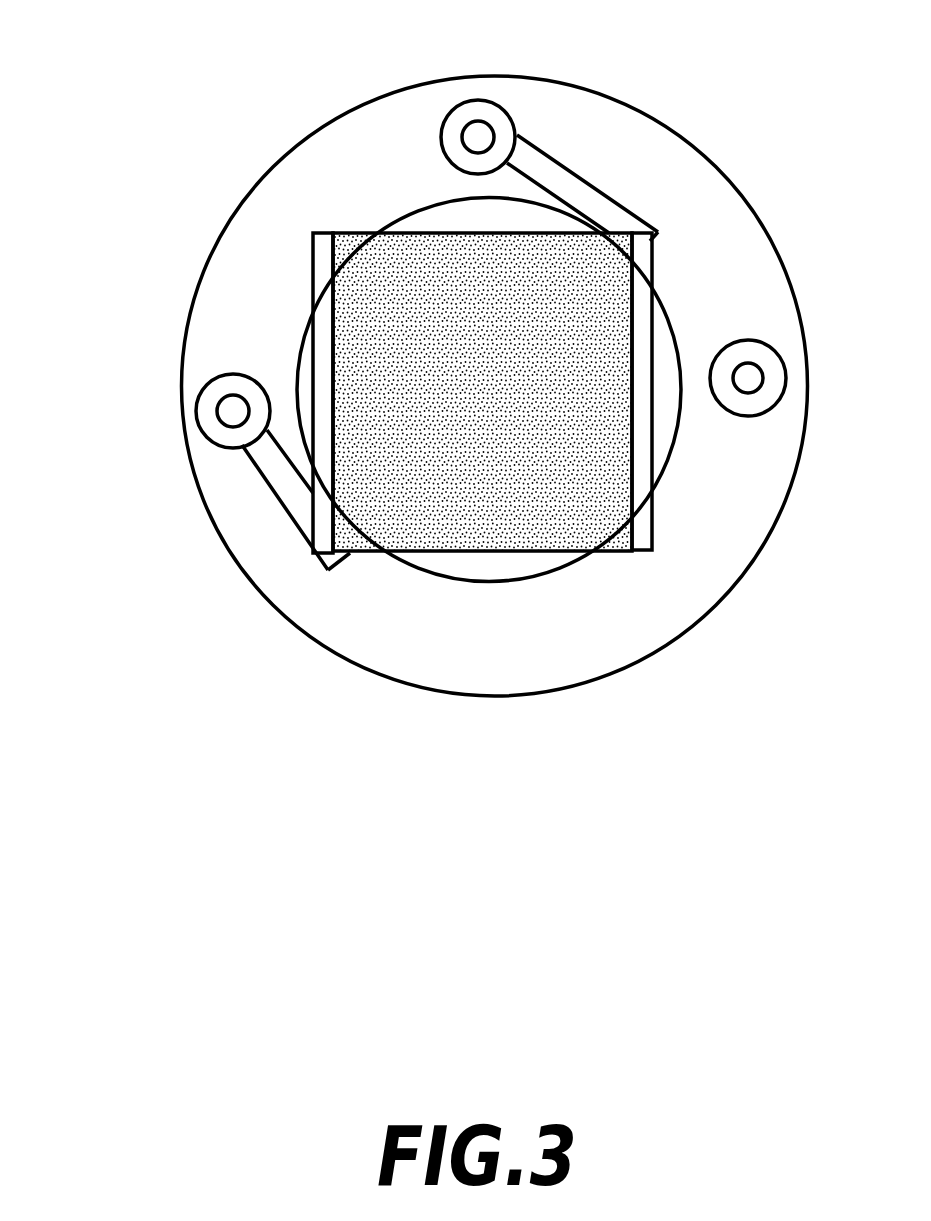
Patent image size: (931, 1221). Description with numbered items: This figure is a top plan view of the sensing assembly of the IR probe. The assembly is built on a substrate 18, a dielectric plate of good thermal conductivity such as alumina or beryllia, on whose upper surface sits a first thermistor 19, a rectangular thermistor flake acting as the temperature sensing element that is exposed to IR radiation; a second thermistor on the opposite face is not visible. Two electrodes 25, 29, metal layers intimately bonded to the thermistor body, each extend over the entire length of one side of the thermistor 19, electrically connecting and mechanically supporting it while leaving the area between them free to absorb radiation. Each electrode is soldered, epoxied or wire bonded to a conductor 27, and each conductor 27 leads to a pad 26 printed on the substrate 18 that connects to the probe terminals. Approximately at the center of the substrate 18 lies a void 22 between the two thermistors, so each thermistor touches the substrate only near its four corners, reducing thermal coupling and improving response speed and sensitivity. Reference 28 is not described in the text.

The substrate 18 is at (418, 113).
The first thermistor 19 is at (608, 522).
The void 22 is at (662, 345).
The electrode 25 is at (312, 267).
The pad 26 is at (231, 413).
The conductor 27 is at (277, 495).
The arm end pad 28 is at (322, 533).
The electrode 29 is at (642, 322).